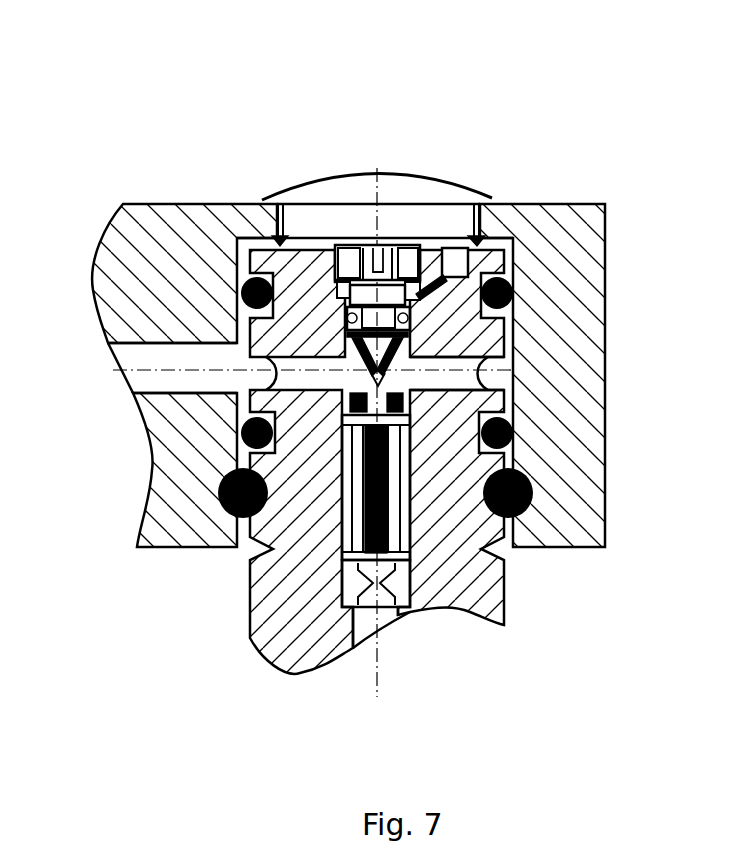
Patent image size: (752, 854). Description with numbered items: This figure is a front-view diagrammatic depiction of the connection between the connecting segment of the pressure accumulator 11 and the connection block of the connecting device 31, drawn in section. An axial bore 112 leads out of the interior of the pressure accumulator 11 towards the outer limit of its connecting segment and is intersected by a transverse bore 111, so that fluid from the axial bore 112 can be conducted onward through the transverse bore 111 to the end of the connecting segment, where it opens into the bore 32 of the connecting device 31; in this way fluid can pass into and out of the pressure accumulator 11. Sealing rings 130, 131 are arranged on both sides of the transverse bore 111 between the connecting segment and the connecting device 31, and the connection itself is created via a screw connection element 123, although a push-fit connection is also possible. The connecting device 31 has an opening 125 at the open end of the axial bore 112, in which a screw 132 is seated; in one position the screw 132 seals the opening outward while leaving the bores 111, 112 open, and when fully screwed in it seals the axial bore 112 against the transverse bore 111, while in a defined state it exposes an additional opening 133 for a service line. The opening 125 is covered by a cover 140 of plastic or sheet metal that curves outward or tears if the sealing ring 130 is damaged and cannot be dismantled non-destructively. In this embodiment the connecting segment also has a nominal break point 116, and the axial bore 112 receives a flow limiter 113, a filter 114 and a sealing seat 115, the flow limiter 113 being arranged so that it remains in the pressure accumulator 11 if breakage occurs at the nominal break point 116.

The pressure accumulator 11 is at (346, 220).
The connecting device 31 is at (173, 257).
The bore of the connecting device 32 is at (168, 374).
The transverse bore 111 is at (462, 375).
The axial bore 112 is at (370, 618).
The flow limiter 113 is at (396, 588).
The filter 114 is at (415, 588).
The sealing seat 115 is at (397, 407).
The nominal break point 116 is at (256, 541).
The screw connection element 123 is at (225, 505).
The opening 125 is at (313, 259).
The sealing ring 130 is at (513, 293).
The sealing ring 131 is at (515, 430).
The screw 132 is at (408, 265).
The additional opening 133 is at (457, 263).
The cover 140 is at (378, 172).